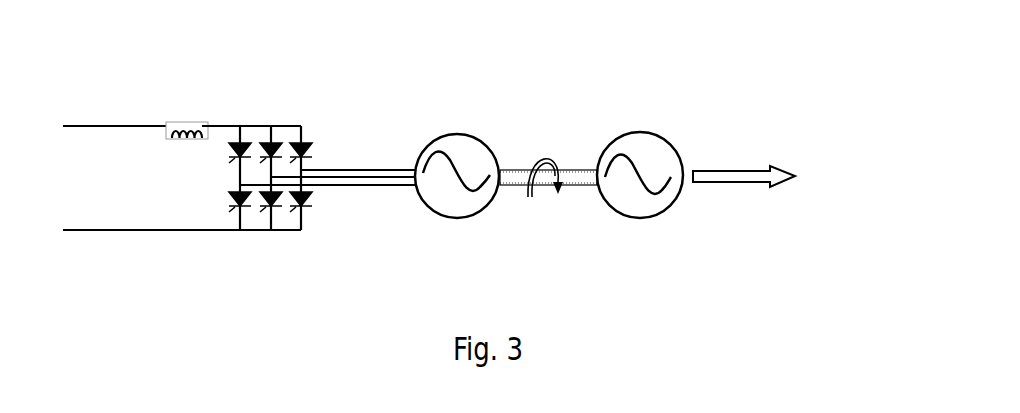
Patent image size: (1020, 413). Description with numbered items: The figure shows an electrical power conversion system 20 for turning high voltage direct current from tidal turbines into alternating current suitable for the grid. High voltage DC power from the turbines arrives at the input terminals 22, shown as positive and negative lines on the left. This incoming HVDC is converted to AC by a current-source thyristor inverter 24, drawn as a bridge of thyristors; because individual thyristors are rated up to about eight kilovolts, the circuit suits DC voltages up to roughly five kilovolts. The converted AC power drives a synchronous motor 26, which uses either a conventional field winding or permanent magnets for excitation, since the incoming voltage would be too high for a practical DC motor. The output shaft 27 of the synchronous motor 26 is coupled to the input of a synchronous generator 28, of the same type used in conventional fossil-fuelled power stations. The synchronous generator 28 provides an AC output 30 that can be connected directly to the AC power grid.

The electrical power conversion system 20 is at (132, 35).
The input terminals 22 is at (77, 262).
The current-source thyristor inverter 24 is at (322, 117).
The synchronous motor 26 is at (440, 213).
The shaft 27 is at (523, 167).
The synchronous generator 28 is at (627, 220).
The AC output 30 is at (797, 140).